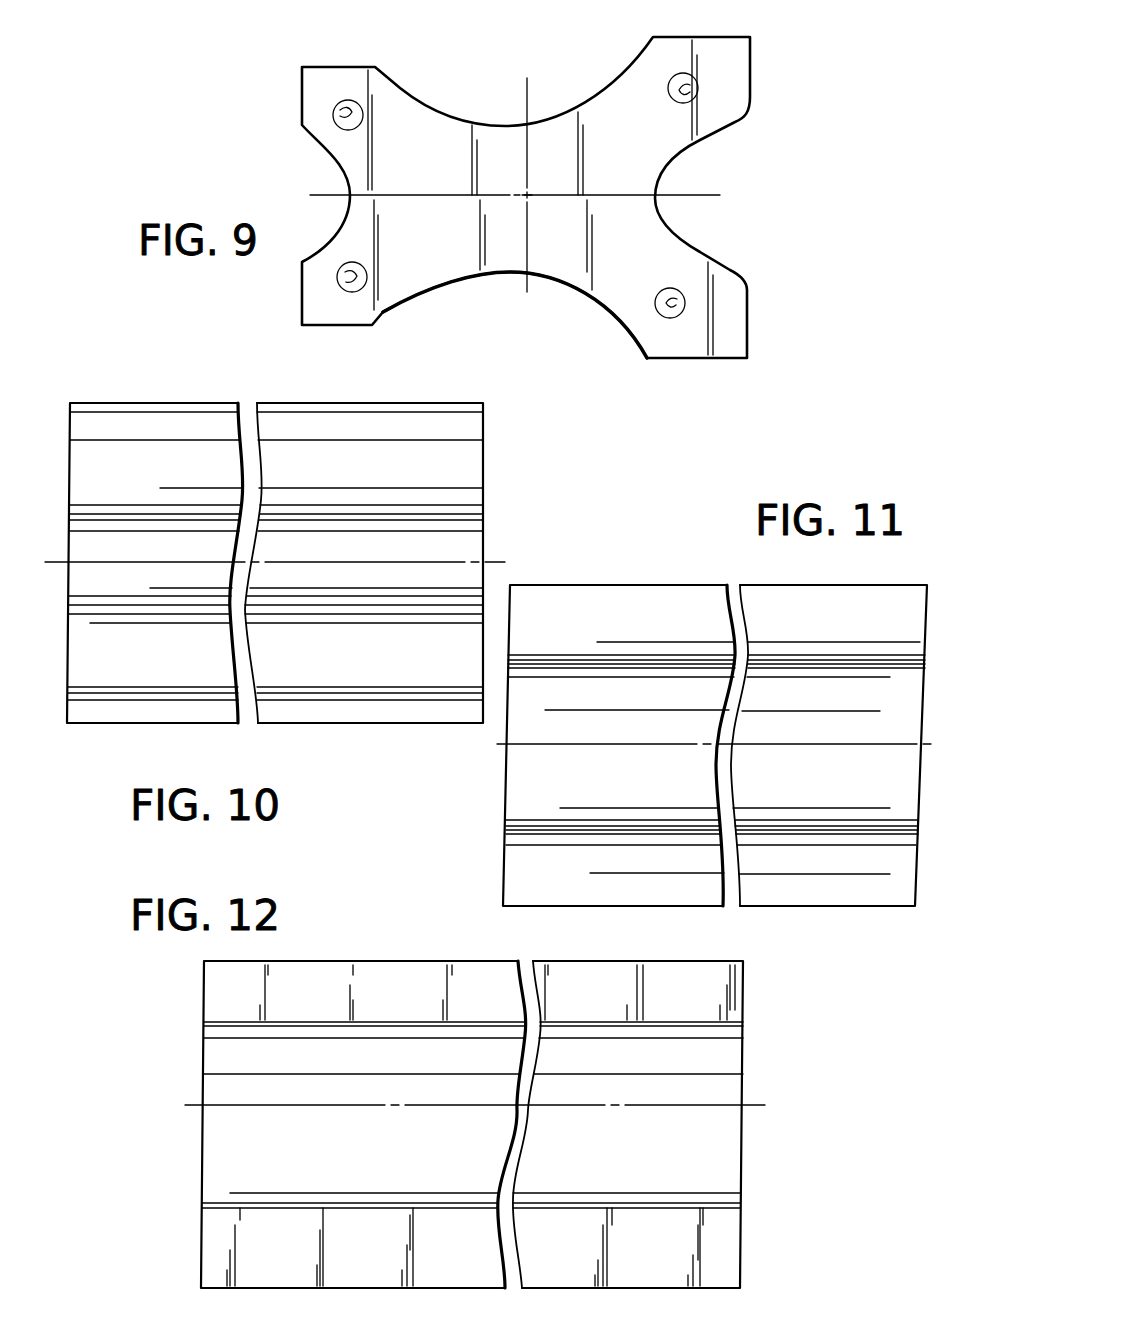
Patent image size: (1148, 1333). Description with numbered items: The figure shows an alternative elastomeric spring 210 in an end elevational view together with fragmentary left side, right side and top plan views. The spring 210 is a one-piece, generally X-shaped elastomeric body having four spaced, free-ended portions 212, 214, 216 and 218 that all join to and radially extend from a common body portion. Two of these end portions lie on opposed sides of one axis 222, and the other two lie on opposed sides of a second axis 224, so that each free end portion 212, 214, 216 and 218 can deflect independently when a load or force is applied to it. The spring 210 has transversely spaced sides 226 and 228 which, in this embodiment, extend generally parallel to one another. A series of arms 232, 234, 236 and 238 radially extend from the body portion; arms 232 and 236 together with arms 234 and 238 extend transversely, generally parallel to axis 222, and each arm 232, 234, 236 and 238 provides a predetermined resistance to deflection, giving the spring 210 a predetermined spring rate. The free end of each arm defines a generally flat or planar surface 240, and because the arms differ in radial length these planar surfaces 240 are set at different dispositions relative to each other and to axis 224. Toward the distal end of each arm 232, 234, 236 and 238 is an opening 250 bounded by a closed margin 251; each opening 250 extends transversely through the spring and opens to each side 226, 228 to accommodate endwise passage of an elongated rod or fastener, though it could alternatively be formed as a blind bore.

In FIG. 9, the spring 210 is at (561, 90).
In FIG. 10, the spring 210 is at (516, 447).
In FIG. 11, the spring 210 is at (681, 579).
In FIG. 12, the spring 210 is at (188, 1192).
In FIG. 9, the free end portion 212 is at (384, 84).
In FIG. 10, the free end portion 212 is at (476, 466).
In FIG. 12, the free end portion 212 is at (350, 970).
In FIG. 9, the free end portion 214 is at (751, 64).
In FIG. 10, the free end portion 214 is at (435, 412).
In FIG. 11, the free end portion 214 is at (604, 597).
In FIG. 12, the free end portion 214 is at (728, 1228).
In FIG. 9, the free end portion 216 is at (381, 309).
In FIG. 10, the free end portion 216 is at (147, 675).
In FIG. 9, the free end portion 218 is at (733, 347).
In FIG. 10, the free end portion 218 is at (416, 690).
In FIG. 11, the free end portion 218 is at (846, 900).
In FIG. 9, the axis 222 is at (529, 168).
In FIG. 12, the axis 222 is at (750, 1105).
In FIG. 9, the axis 224 is at (692, 196).
In FIG. 10, the axis 224 is at (488, 562).
In FIG. 11, the axis 224 is at (652, 748).
In FIG. 10, the side 226 is at (66, 420).
In FIG. 11, the side 226 is at (945, 583).
In FIG. 12, the side 226 is at (203, 998).
In FIG. 10, the side 228 is at (488, 412).
In FIG. 11, the side 228 is at (503, 874).
In FIG. 12, the side 228 is at (743, 1168).
In FIG. 9, the arm 232 is at (346, 151).
In FIG. 9, the arm 234 is at (699, 140).
In FIG. 9, the arm 236 is at (356, 246).
In FIG. 9, the arm 238 is at (676, 262).
In FIG. 9, the planar surface 240 is at (338, 66).
In FIG. 10, the planar surface 240 is at (170, 403).
In FIG. 11, the planar surface 240 is at (790, 585).
In FIG. 12, the planar surface 240 is at (420, 968).
In FIG. 9, the opening 250 is at (338, 110).
In FIG. 9, the closed margin 251 is at (683, 73).